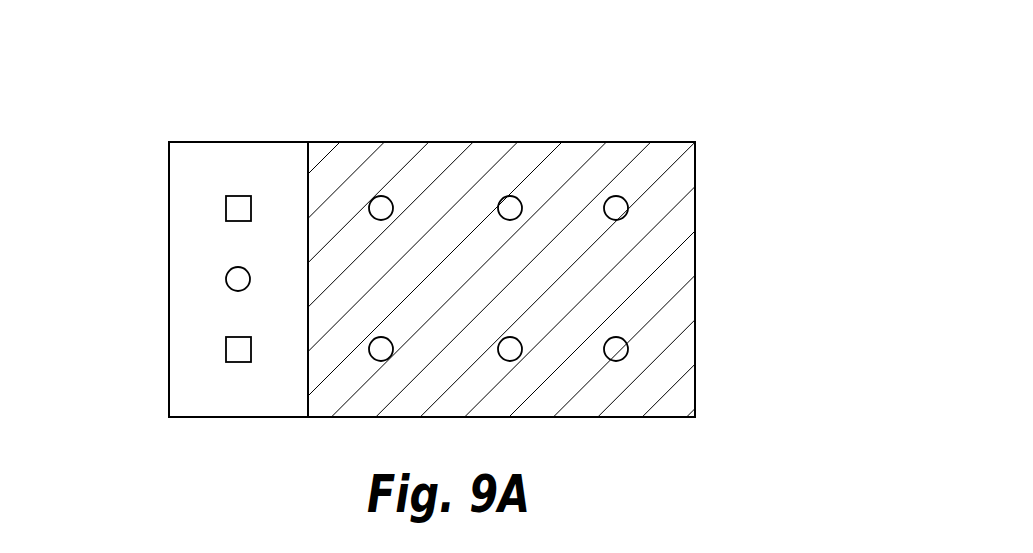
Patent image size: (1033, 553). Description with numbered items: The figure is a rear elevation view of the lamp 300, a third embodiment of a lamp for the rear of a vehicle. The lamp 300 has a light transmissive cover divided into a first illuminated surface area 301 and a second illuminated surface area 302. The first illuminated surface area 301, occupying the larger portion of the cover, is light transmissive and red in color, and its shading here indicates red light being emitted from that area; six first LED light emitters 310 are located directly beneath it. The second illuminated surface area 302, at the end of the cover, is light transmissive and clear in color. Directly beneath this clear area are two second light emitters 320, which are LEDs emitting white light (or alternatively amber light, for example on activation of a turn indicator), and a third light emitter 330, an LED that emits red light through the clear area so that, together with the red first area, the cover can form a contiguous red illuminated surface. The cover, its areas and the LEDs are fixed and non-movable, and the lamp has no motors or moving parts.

The lamp 300 is at (657, 88).
The first illuminated surface area 301 is at (672, 272).
The second illuminated surface area 302 is at (185, 333).
The first LED light emitter 310 is at (500, 197).
The second light emitter 320 is at (226, 200).
The third light emitter 330 is at (227, 275).